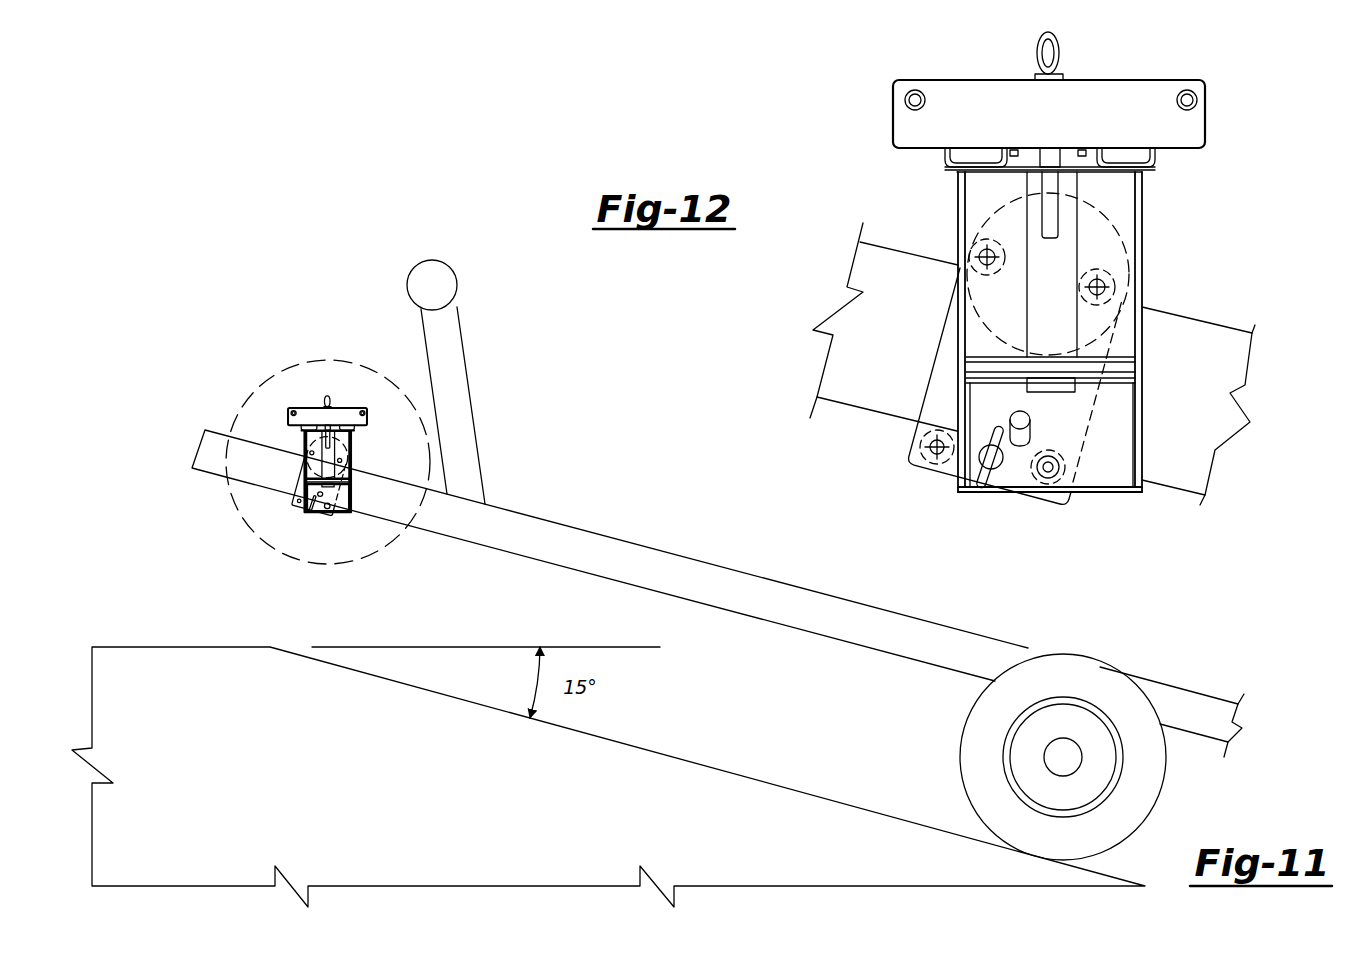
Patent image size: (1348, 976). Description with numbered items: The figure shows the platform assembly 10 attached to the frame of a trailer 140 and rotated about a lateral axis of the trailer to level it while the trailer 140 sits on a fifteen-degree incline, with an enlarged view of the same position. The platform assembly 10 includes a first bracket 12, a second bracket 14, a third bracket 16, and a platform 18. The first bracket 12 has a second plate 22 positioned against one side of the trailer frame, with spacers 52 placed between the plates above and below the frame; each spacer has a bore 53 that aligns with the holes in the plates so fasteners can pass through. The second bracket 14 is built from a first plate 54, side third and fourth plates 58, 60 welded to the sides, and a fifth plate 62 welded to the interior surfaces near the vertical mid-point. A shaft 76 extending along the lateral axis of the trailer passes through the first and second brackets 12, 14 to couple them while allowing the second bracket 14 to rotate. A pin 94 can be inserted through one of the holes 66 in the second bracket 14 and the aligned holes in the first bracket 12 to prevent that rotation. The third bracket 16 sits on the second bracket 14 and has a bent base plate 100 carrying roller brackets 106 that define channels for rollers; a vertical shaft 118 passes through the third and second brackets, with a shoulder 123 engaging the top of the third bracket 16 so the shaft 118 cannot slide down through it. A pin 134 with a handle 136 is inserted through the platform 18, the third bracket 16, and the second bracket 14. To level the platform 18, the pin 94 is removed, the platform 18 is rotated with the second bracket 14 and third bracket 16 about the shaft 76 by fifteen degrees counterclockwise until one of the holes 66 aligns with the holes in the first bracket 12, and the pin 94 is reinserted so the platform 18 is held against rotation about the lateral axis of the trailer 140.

In FIG. 12, the platform assembly 10 is at (825, 90).
In FIG. 11, the platform assembly 10 is at (353, 400).
In FIG. 12, the first bracket 12 is at (926, 483).
In FIG. 11, the first bracket 12 is at (313, 360).
In FIG. 12, the second bracket 14 is at (1142, 514).
In FIG. 12, the third bracket 16 is at (1191, 167).
In FIG. 12, the platform 18 is at (963, 77).
In FIG. 12, the second plate 22 is at (927, 384).
In FIG. 12, the spacers 52 is at (984, 257).
In FIG. 12, the bore 53 is at (974, 250).
In FIG. 12, the first plate 54 is at (1108, 265).
In FIG. 12, the third plate 58 is at (957, 298).
In FIG. 12, the fourth plate 60 is at (1143, 272).
In FIG. 12, the fifth plate 62 is at (996, 356).
In FIG. 12, the holes 66 is at (1031, 425).
In FIG. 12, the shaft 76 is at (1078, 247).
In FIG. 12, the pin 94 is at (982, 489).
In FIG. 12, the base plate 100 is at (950, 168).
In FIG. 12, the roller brackets 106 is at (977, 158).
In FIG. 12, the shaft 118 is at (1059, 320).
In FIG. 12, the shoulder 123 is at (1083, 155).
In FIG. 12, the pin 134 is at (1048, 240).
In FIG. 12, the handle 136 is at (1061, 52).
In FIG. 12, the trailer 140 is at (1183, 503).
In FIG. 11, the trailer 140 is at (607, 525).